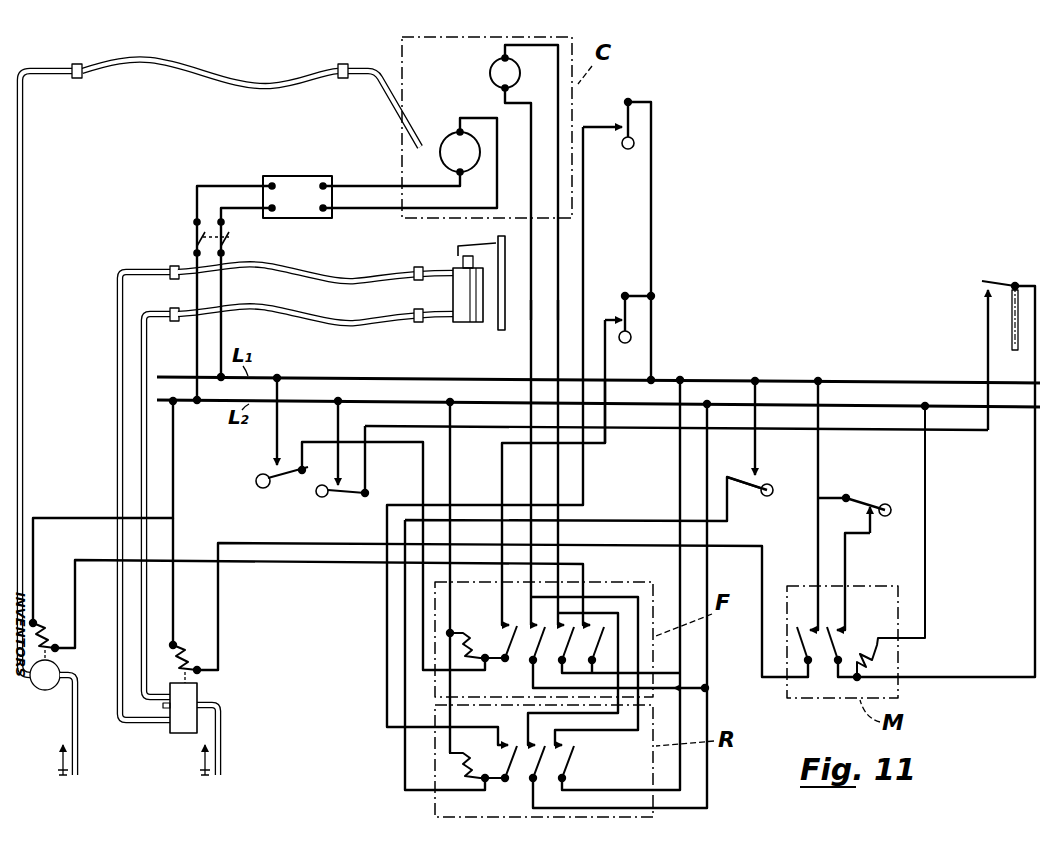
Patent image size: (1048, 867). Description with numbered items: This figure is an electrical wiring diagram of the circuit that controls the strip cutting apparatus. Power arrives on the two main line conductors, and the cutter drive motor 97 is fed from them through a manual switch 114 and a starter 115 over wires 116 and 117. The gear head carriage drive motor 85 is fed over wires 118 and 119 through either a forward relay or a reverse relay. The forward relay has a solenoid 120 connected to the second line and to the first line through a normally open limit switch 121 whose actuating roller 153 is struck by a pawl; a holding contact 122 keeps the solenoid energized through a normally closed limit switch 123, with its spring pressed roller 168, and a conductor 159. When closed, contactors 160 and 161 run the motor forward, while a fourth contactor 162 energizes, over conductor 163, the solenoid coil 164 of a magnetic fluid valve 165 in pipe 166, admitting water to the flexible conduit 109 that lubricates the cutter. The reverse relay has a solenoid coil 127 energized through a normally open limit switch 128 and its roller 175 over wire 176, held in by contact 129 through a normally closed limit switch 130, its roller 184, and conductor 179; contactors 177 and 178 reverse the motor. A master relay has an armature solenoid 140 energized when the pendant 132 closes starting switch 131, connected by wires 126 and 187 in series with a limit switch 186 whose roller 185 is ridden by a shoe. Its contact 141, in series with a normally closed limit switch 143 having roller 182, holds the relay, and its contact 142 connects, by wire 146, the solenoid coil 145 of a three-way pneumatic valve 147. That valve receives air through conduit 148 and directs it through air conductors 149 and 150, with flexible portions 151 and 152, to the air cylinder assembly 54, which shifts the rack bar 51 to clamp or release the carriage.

The flexible conduit 109 is at (210, 77).
The starter 115 is at (296, 175).
The conductor or wire 116 is at (370, 184).
The conductor or wire 117 is at (360, 212).
The manual switch 114 is at (194, 240).
The air conductor 149 is at (130, 268).
The air conductor or conduit 150 is at (140, 410).
The flexible portion 151 is at (288, 268).
The flexible portion 152 is at (288, 320).
The gear head carriage drive motor 85 is at (496, 70).
The cutter drive motor 97 is at (452, 160).
The conductor or wire 118 is at (556, 130).
The conductor or wire 119 is at (530, 360).
The normally closed limit switch 130 is at (624, 102).
The spring pressed roller 184 is at (628, 150).
The wire or conductor 179 is at (587, 256).
The normally closed limit switch 123 is at (618, 294).
The spring pressed roller 168 is at (632, 338).
The starting switch 131 is at (1005, 280).
The pendant or finger 132 is at (1010, 328).
The air cylinder assembly 54 is at (460, 322).
The rack bar 51 is at (496, 322).
The pipe or conduit 166 is at (24, 462).
The actuating roller 153 is at (256, 481).
The normally open limit switch 121 is at (286, 480).
The spring pressed roller 185 is at (318, 497).
The normally open limit switch 186 is at (348, 498).
The wire or conductor 159 is at (608, 444).
The conductor or wire 176 is at (604, 524).
The spring pressed roller 175 is at (775, 484).
The normally open limit switch 128 is at (750, 490).
The normally closed limit switch 143 is at (862, 488).
The spring pressed roller 182 is at (885, 518).
The wire or conductor 187 is at (960, 434).
The conductor or wire 146 is at (220, 596).
The conductor 163 is at (284, 568).
The solenoid coil 164 is at (40, 614).
The solenoid coil 145 is at (188, 644).
The three-way electrically operated pneumatic valve 147 is at (197, 692).
The air conductor or conduit 148 is at (230, 740).
The magnetic fluid valve 165 is at (47, 686).
The solenoid coil 120 is at (472, 632).
The holding contact 122 is at (505, 665).
The relay contactor 160 is at (534, 665).
The relay contactor 161 is at (572, 622).
The relay contactor 162 is at (604, 622).
The solenoid coil 127 is at (455, 758).
The holding contact 129 is at (512, 780).
The relay contactor 178 is at (572, 753).
The relay contactor 177 is at (568, 774).
The relay contact 142 is at (800, 642).
The relay contact 141 is at (835, 640).
The armature solenoid 140 is at (882, 654).
The wire 126 is at (962, 680).